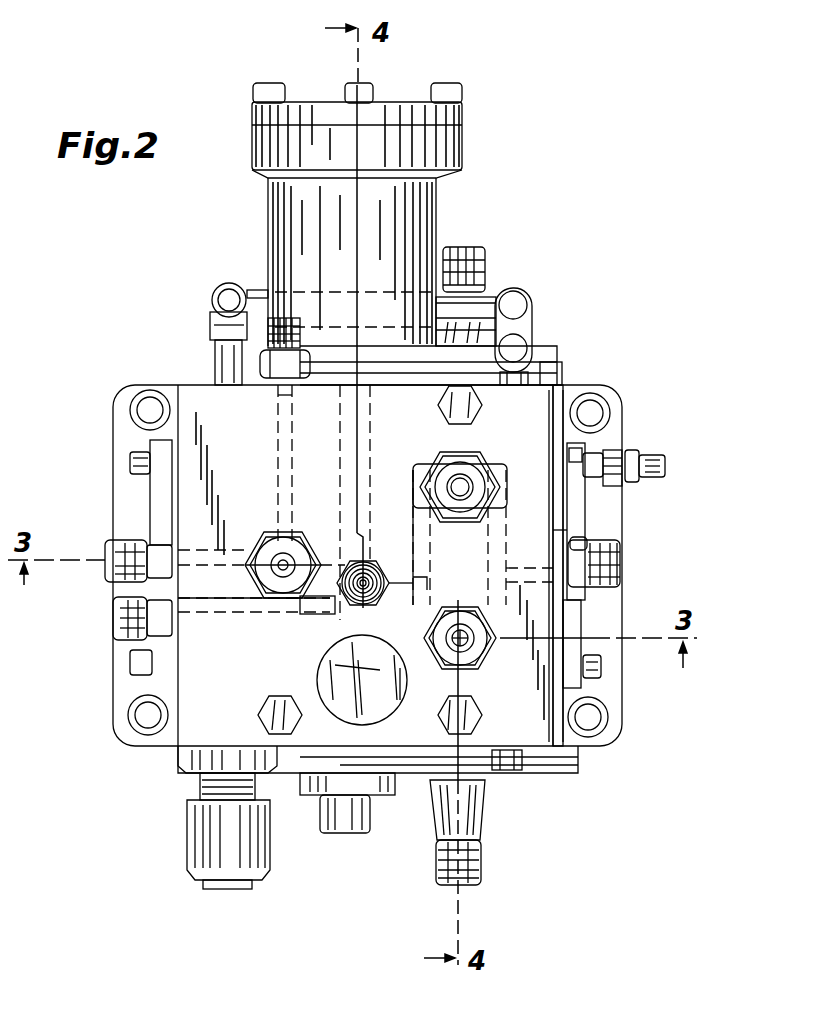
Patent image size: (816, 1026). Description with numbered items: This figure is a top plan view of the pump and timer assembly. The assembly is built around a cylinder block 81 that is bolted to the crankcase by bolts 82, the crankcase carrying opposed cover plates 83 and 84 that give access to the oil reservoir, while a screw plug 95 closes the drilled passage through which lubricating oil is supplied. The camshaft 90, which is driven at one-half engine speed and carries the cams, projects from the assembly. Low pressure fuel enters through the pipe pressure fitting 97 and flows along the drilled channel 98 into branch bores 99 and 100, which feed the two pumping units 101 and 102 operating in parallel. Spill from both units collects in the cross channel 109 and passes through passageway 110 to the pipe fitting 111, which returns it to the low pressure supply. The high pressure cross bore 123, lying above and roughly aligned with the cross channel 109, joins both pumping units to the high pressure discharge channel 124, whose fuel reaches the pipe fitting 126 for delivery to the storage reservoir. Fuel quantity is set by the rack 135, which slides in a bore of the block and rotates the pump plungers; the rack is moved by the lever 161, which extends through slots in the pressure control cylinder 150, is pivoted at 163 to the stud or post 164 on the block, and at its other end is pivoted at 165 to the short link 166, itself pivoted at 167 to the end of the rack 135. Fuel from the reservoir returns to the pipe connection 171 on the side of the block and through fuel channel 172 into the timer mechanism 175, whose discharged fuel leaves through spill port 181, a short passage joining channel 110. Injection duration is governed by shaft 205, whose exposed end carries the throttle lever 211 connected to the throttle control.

The cylinder block 81 is at (188, 393).
The bolts 82 is at (478, 414).
The cover plate 83 is at (562, 630).
The cover plate 84 is at (150, 502).
The camshaft 90 is at (486, 828).
The screw plug 95 is at (378, 700).
The pipe pressure fitting 97 is at (620, 572).
The channel 98 is at (533, 568).
The branch bore 99 is at (505, 604).
The branch bore 100 is at (500, 525).
The pumping unit 101 is at (515, 694).
The pumping unit 102 is at (465, 482).
The cross channel 109 is at (432, 560).
The passageway 110 is at (212, 612).
The pipe fitting 111 is at (113, 616).
The high pressure cross bore 123 is at (455, 522).
The high pressure discharge channel 124 is at (404, 562).
The pipe fitting 126 is at (363, 558).
The rack 135 is at (535, 383).
The pressure control cylinder 150 is at (425, 207).
The lever 161 is at (258, 293).
The pivot 163 is at (212, 298).
The stud or post 164 is at (212, 316).
The pivot 165 is at (527, 296).
The short link 166 is at (533, 320).
The pivot 167 is at (527, 350).
The pipe connection 171 is at (262, 358).
The fuel channel 172 is at (285, 405).
The timer mechanism 175 is at (283, 545).
The spill port 181 is at (302, 610).
The shaft 205 is at (300, 775).
The lever 211 is at (390, 795).